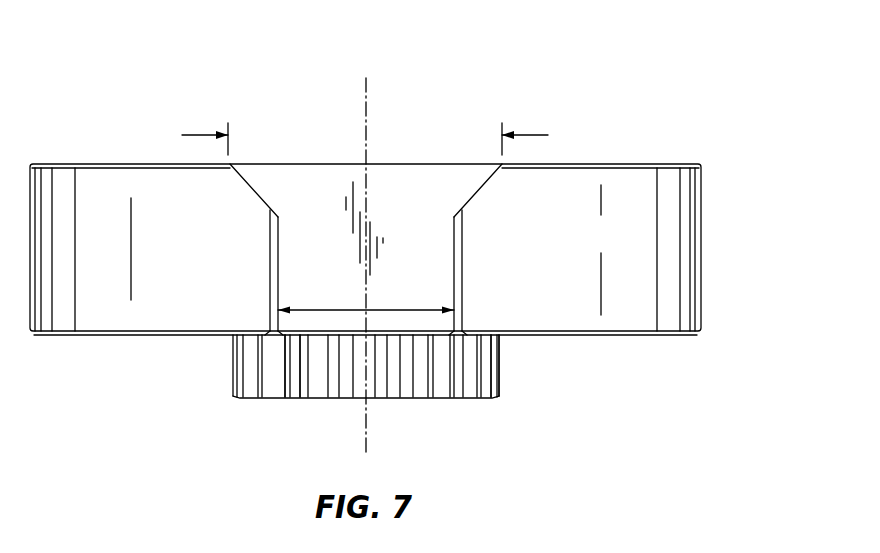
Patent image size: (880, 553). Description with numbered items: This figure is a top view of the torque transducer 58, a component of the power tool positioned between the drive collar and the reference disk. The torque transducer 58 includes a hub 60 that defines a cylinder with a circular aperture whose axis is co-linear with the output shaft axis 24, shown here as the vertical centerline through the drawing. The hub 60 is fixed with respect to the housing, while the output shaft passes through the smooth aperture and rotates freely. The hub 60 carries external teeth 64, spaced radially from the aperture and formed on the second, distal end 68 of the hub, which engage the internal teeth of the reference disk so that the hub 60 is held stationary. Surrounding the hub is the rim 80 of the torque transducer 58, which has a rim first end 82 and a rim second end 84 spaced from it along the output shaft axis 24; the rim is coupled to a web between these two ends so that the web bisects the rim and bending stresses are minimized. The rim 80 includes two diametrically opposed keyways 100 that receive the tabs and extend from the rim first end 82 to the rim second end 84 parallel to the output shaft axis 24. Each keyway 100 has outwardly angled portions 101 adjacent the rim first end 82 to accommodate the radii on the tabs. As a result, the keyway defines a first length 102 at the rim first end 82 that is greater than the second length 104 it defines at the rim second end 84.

The torque transducer 58 is at (598, 50).
The output shaft axis 24 is at (370, 113).
The rim 80 is at (686, 238).
The rim first end 82 is at (570, 164).
The rim second end 84 is at (600, 337).
The keyway 100 is at (420, 278).
The outwardly angled portion 101 is at (252, 191).
The first length 102 is at (186, 138).
The second length 104 is at (333, 307).
The hub 60 is at (439, 381).
The external teeth 64 is at (295, 380).
The second end 68 is at (486, 399).